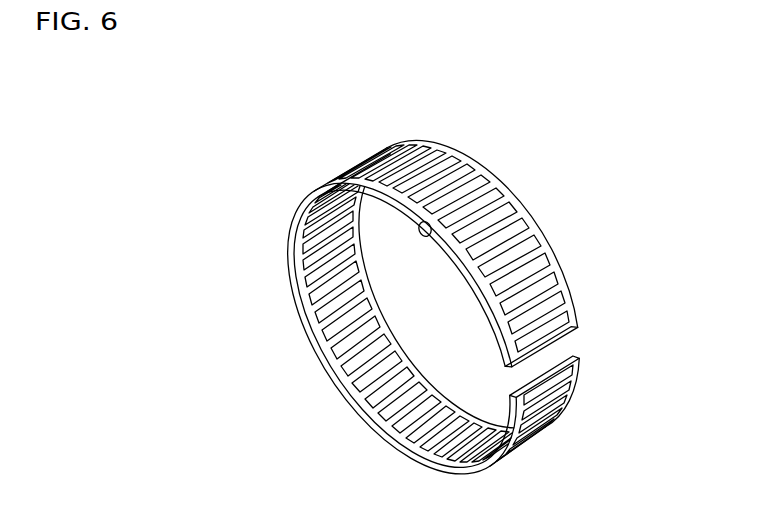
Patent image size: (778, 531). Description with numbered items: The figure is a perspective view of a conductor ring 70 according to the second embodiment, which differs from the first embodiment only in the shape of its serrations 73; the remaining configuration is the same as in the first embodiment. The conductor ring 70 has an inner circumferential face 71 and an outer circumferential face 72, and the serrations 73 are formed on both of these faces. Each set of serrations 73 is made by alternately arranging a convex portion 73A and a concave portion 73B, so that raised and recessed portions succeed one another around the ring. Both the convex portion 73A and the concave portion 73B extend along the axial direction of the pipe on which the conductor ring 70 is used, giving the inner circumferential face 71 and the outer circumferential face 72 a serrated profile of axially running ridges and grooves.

The conductor ring 70 is at (325, 133).
The inner circumferential face 71 is at (427, 222).
The outer circumferential face 72 is at (520, 208).
The serrations 73 is at (656, 202).
The convex portion 73A is at (543, 240).
The concave portion 73B is at (542, 252).